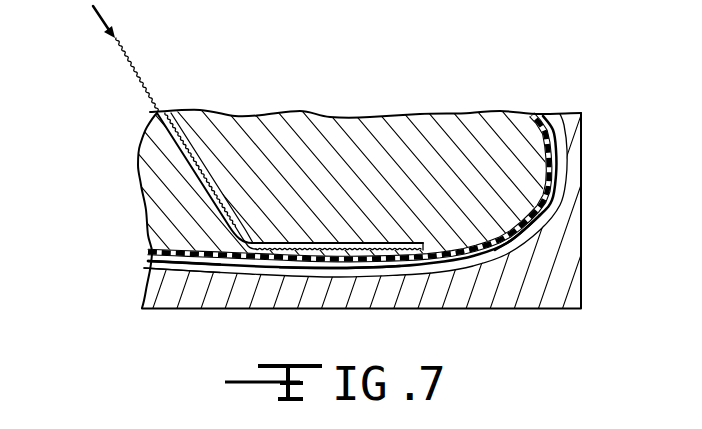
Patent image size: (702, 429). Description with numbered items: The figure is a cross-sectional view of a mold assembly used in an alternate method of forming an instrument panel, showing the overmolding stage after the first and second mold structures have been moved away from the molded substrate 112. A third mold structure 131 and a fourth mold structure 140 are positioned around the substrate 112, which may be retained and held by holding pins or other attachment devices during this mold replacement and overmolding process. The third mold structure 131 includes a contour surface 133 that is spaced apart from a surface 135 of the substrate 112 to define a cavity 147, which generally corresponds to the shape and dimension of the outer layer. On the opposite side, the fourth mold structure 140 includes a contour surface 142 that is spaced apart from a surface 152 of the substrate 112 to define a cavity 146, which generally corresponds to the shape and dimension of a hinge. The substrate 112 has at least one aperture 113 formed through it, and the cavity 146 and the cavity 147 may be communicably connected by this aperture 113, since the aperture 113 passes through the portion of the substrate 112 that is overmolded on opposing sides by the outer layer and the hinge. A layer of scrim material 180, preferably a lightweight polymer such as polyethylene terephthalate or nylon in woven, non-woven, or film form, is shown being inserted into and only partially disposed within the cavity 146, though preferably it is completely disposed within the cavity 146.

The scrim material 180 is at (157, 112).
The fourth mold structure 140 is at (305, 113).
The contour surface 142 is at (412, 249).
The substrate 112 is at (555, 163).
The surface 135 is at (550, 229).
The third mold structure 131 is at (581, 279).
The contour surface 133 is at (527, 250).
The aperture 113 is at (287, 260).
The cavity 146 is at (197, 187).
The surface 152 is at (152, 240).
The cavity 147 is at (150, 262).